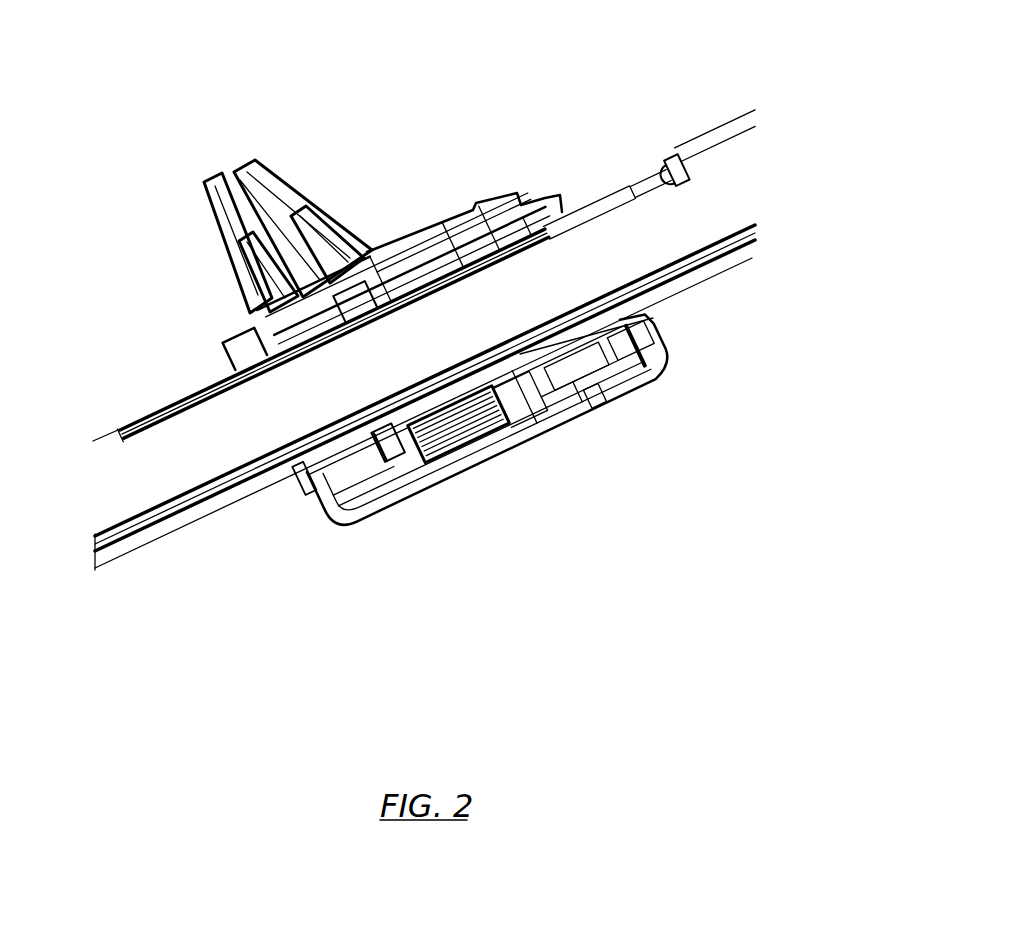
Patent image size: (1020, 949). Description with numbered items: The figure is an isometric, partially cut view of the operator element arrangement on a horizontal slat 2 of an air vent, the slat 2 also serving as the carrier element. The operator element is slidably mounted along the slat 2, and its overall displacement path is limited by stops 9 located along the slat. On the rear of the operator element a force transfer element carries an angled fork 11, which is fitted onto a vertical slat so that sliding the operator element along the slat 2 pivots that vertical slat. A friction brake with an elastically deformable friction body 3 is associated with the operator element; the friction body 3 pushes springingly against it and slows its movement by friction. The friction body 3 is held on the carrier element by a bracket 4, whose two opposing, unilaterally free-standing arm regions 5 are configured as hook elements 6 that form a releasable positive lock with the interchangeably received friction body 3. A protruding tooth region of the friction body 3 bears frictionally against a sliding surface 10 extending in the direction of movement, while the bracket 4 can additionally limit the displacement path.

The slat 2 is at (715, 208).
The friction body 3 is at (473, 423).
The bracket 4 is at (327, 490).
The arm regions 5 is at (507, 379).
The hook elements 6 is at (398, 435).
The stops 9 is at (110, 424).
The sliding surface 10 is at (563, 378).
The angled fork 11 is at (283, 197).